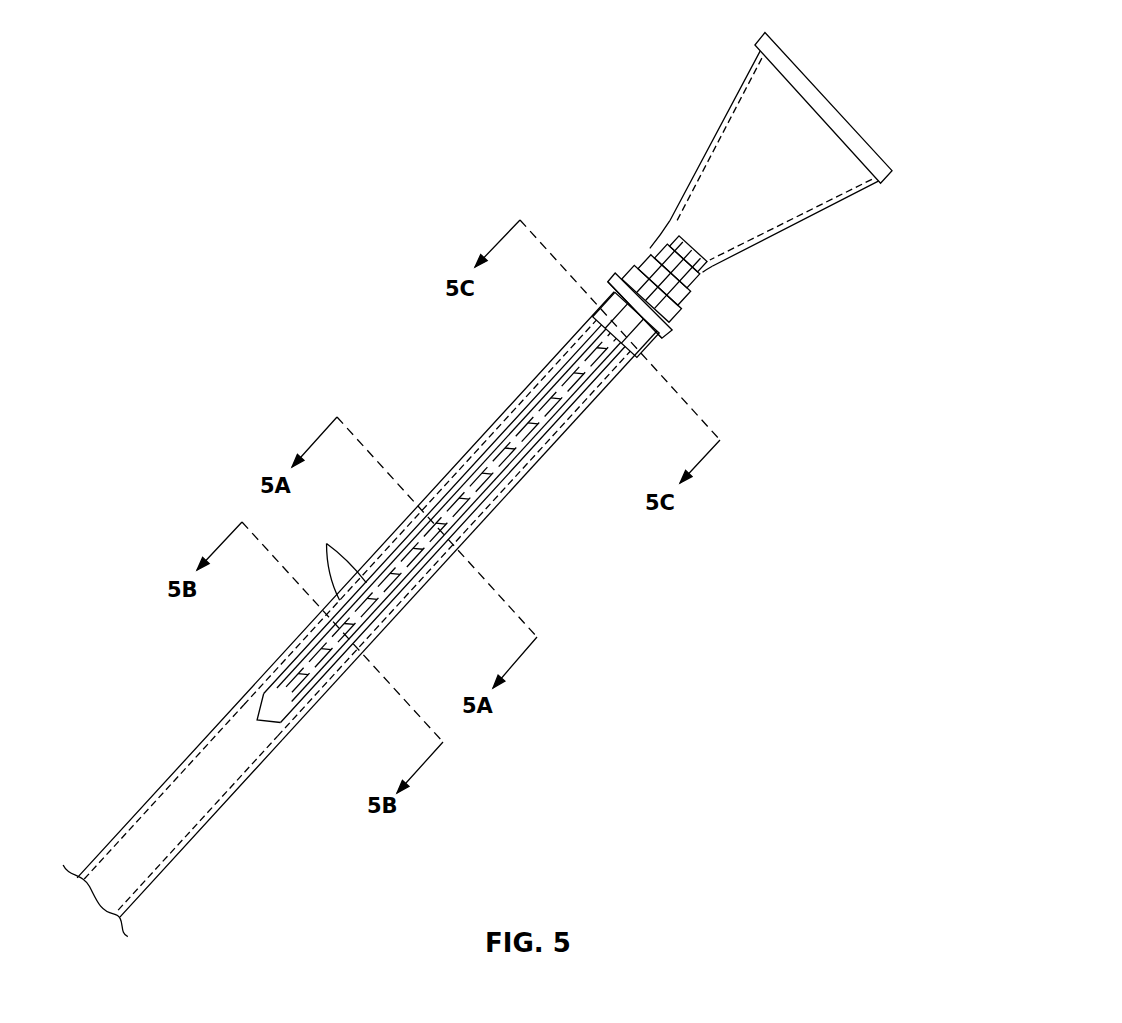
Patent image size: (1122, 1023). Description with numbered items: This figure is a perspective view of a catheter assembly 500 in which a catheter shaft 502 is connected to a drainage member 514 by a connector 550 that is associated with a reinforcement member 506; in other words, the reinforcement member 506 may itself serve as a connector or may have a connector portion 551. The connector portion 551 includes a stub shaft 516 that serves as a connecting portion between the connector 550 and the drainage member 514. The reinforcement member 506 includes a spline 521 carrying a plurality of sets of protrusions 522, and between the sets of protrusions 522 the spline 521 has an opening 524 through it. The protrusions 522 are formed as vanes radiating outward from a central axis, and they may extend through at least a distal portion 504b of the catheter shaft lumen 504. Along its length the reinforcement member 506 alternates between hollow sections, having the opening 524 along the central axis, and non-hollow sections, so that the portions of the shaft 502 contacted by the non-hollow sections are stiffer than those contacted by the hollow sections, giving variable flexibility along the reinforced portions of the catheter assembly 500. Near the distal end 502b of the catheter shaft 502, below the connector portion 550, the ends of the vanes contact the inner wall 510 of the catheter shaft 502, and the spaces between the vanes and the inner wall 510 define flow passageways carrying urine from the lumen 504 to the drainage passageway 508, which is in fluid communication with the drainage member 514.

The catheter assembly 500 is at (630, 150).
The catheter shaft 502 is at (115, 840).
The distal end of the catheter shaft 502b is at (658, 342).
The catheter shaft lumen 504 is at (148, 852).
The distal portion of the catheter shaft lumen 504b is at (532, 380).
The reinforcement member 506 is at (510, 428).
The drainage passageway 508 is at (695, 253).
The inner wall of the catheter shaft 510 is at (497, 517).
The drainage member 514 is at (708, 143).
The stub shaft 516 is at (590, 315).
The spline 521 is at (523, 463).
The protrusions 522 is at (328, 545).
The opening 524 is at (417, 547).
The connector 550 is at (633, 247).
The connector portion 551 is at (607, 310).